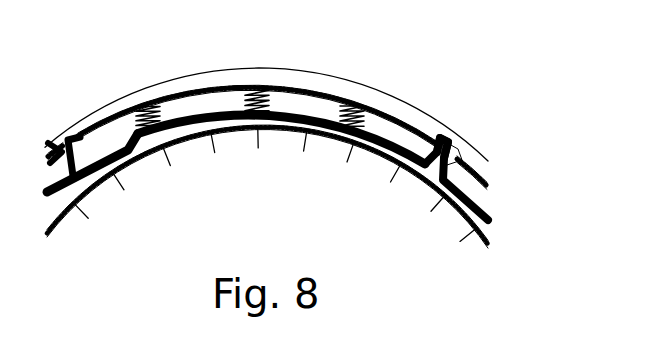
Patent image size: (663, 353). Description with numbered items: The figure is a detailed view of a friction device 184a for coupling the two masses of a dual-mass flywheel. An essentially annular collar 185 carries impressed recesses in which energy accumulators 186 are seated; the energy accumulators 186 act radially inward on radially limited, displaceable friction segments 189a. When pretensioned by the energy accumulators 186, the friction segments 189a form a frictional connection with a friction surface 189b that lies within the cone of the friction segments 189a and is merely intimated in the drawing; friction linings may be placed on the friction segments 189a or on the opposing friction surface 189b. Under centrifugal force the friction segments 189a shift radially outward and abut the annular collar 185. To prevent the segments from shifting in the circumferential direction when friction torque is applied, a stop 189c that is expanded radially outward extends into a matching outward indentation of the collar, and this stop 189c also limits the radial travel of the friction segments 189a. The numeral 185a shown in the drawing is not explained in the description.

The friction device 184a is at (452, 105).
The annular collar 185 is at (253, 92).
The spring 185a is at (156, 100).
The energy accumulator 186 is at (145, 105).
The friction segments 189a is at (303, 112).
The friction surface 189b is at (288, 108).
The stop 189c is at (436, 140).